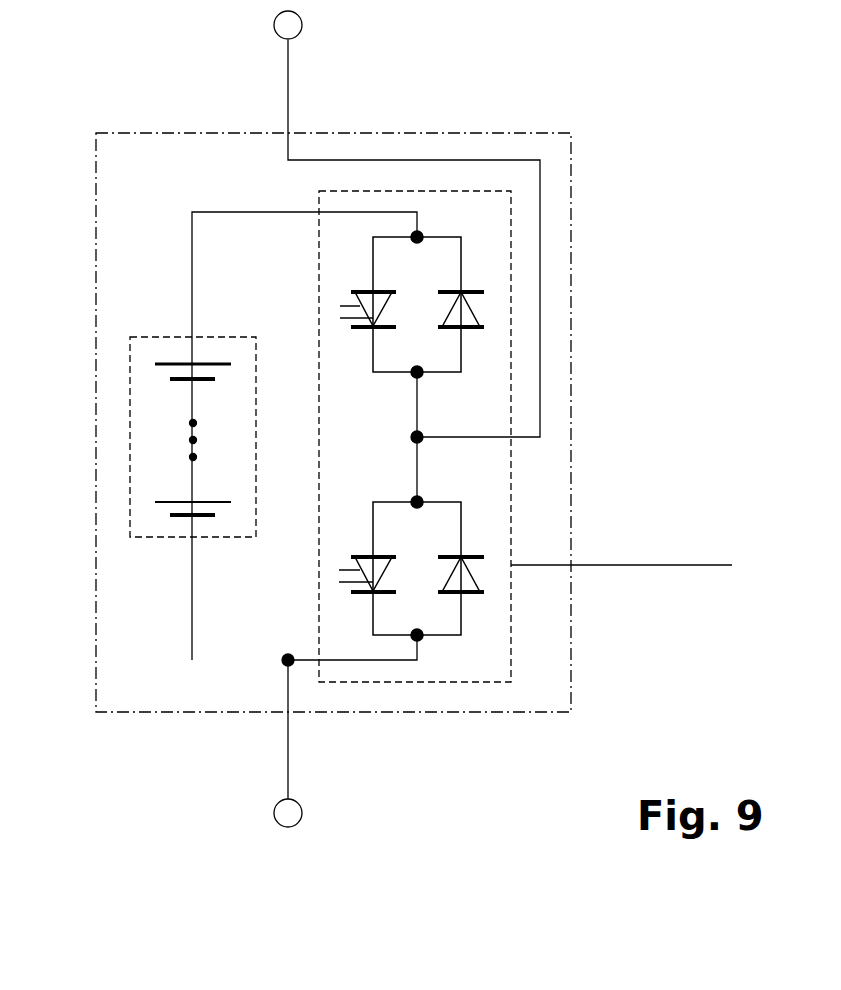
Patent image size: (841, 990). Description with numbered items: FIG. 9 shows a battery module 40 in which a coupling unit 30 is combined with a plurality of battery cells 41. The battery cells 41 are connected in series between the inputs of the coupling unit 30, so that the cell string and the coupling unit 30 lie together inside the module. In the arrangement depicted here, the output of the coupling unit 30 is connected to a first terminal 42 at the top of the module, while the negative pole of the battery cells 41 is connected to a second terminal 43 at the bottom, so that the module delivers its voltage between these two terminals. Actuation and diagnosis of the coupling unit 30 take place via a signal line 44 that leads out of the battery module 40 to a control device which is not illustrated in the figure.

The battery module 40 is at (571, 213).
The coupling unit 30 is at (511, 257).
The battery cells 41 is at (130, 446).
The first terminal 42 is at (302, 24).
The second terminal 43 is at (302, 812).
The signal line 44 is at (671, 565).